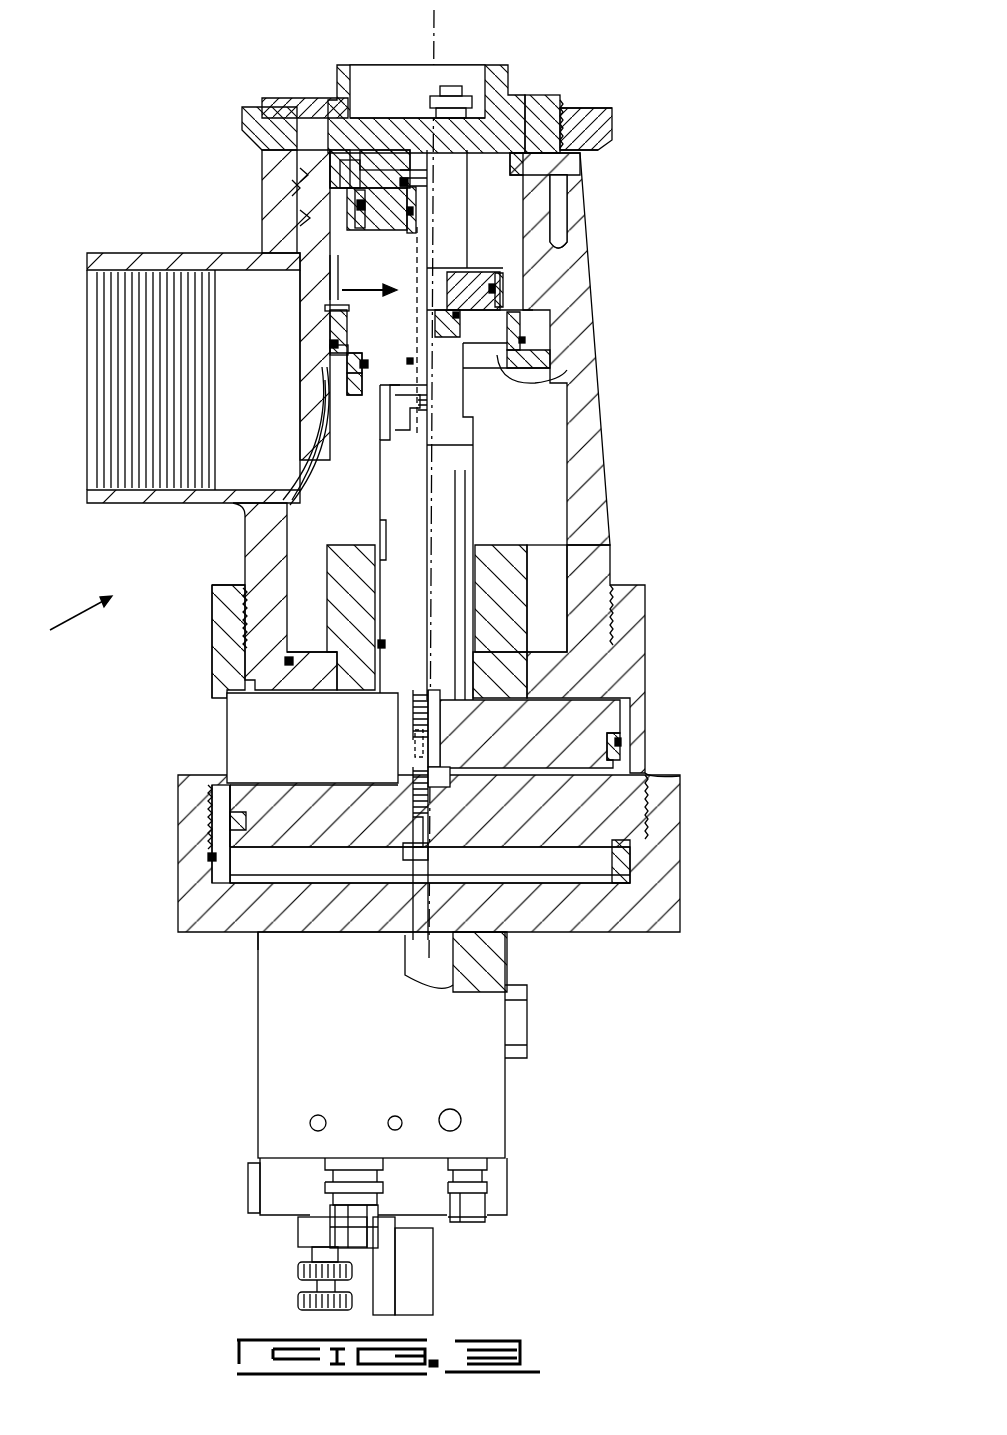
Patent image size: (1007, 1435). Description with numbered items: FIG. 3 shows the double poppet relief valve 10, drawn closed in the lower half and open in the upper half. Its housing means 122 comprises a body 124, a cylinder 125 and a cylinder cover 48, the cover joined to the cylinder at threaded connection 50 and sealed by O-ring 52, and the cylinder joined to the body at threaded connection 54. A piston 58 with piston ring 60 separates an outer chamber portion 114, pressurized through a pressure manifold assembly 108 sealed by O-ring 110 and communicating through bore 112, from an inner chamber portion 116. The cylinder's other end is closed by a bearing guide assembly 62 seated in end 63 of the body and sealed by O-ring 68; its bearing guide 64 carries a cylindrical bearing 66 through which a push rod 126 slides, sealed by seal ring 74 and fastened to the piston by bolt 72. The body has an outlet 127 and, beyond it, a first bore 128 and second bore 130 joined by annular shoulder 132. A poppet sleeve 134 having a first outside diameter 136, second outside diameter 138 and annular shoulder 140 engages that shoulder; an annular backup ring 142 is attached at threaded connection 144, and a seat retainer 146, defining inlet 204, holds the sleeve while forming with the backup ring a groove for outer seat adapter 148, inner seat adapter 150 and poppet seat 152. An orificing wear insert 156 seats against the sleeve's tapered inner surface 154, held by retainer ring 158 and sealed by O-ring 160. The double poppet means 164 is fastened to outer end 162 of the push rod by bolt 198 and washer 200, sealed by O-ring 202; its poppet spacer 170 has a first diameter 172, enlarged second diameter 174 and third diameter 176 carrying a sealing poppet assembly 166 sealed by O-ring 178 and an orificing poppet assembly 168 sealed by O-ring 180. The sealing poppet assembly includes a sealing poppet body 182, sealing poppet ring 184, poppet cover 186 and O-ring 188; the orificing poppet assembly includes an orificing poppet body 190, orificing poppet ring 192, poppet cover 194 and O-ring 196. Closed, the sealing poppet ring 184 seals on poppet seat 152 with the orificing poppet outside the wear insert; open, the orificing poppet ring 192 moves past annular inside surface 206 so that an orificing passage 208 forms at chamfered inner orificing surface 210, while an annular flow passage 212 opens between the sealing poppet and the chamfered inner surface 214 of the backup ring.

The relief valve 10 is at (64, 617).
The cylinder cover 48 is at (200, 898).
The threaded connection 50 is at (212, 829).
The O-ring 52 is at (210, 858).
The threaded connection 54 is at (240, 604).
The piston 58 is at (262, 792).
The piston ring 60 is at (230, 818).
The bearing guide assembly 62 is at (431, 590).
The end 63 is at (317, 694).
The bearing guide 64 is at (342, 572).
The cylindrical bearing 66 is at (375, 545).
The O-ring 68 is at (291, 662).
The bolt 72 is at (403, 855).
The seal ring 74 is at (385, 647).
The pressure manifold assembly 108 is at (278, 1073).
The O-ring 110 is at (500, 952).
The bore 112 is at (442, 897).
The outer chamber portion 114 is at (287, 860).
The inner chamber portion 116 is at (270, 730).
The housing means 122 is at (379, 717).
The body 124 is at (265, 548).
The cylinder 125 is at (222, 710).
The push rod 126 is at (402, 512).
The outlet 127 is at (115, 268).
The first bore 128 is at (298, 110).
The second bore 130 is at (305, 218).
The annular shoulder 132 is at (300, 172).
The poppet sleeve 134 is at (318, 265).
The first outside diameter 136 is at (292, 188).
The second outside diameter 138 is at (332, 240).
The annular shoulder 140 is at (568, 188).
The annular backup ring 142 is at (552, 168).
The threaded connection 144 is at (527, 160).
The seat retainer 146 is at (538, 135).
The outer seat adapter 148 is at (532, 110).
The inner seat adapter 150 is at (535, 150).
The poppet seat 152 is at (535, 122).
The tapered inner surface 154 is at (520, 330).
The orificing wear insert 156 is at (327, 330).
The retainer ring 158 is at (452, 318).
The O-ring 160 is at (522, 349).
The outer end 162 is at (366, 398).
The double poppet means 164 is at (297, 297).
The sealing poppet assembly 166 is at (282, 120).
The orificing poppet assembly 168 is at (296, 418).
The poppet spacer 170 is at (454, 217).
The first diameter 172 is at (462, 108).
The enlarged second diameter 174 is at (463, 242).
The third diameter 176 is at (463, 273).
The O-ring 178 is at (448, 128).
The O-ring 180 is at (470, 292).
The sealing poppet body 182 is at (350, 187).
The sealing poppet ring 184 is at (325, 158).
The poppet cover 186 is at (372, 210).
The O-ring 188 is at (330, 180).
The orificing poppet body 190 is at (327, 395).
The orificing poppet ring 192 is at (353, 372).
The poppet cover 194 is at (335, 352).
The O-ring 196 is at (357, 378).
The bolt 198 is at (420, 172).
The washer 200 is at (393, 178).
The O-ring 202 is at (403, 402).
The inlet 204 is at (495, 80).
The annular inside surface 206 is at (325, 330).
The orificing passage 208 is at (343, 366).
The chamfered inner orificing surface 210 is at (515, 380).
The annular flow passage 212 is at (297, 145).
The chamfered inner surface 214 is at (585, 201).